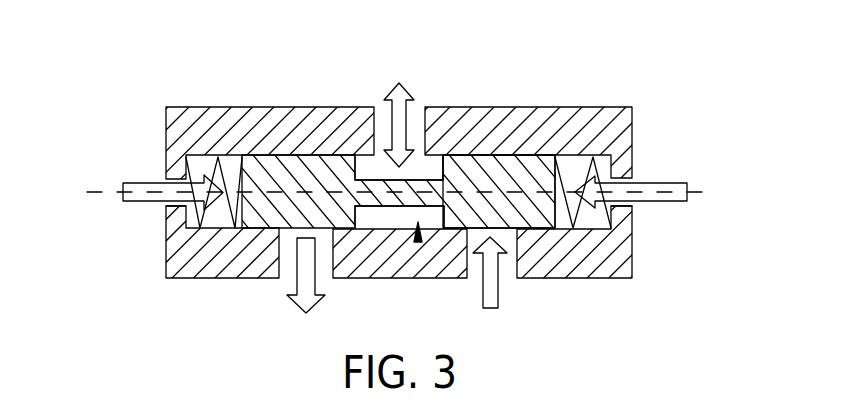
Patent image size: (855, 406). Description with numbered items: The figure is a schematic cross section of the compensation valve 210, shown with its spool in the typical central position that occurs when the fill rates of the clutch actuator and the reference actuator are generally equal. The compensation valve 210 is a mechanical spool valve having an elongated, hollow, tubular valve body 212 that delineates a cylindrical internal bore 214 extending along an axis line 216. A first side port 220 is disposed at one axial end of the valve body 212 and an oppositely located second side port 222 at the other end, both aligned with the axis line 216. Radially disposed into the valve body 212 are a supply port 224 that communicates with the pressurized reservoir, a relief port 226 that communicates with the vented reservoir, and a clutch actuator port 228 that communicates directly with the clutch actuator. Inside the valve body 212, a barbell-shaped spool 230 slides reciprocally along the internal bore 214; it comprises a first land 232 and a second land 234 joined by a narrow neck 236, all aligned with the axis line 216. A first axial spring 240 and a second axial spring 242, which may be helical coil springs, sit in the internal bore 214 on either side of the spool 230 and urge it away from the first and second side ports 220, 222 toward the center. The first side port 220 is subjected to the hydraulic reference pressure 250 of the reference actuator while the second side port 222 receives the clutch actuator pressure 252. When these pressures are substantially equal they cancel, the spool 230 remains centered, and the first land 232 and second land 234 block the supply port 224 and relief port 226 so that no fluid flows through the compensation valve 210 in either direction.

The compensation valve 210 is at (308, 80).
The valve body 212 is at (238, 133).
The internal bore 214 is at (419, 241).
The axis line 216 is at (700, 190).
The first side port 220 is at (166, 181).
The second side port 222 is at (622, 182).
The supply port 224 is at (516, 267).
The relief port 226 is at (282, 262).
The clutch actuator port 228 is at (378, 126).
The spool 230 is at (436, 155).
The first land 232 is at (302, 172).
The second land 234 is at (492, 168).
The neck 236 is at (397, 208).
The first axial spring 240 is at (192, 215).
The second axial spring 242 is at (604, 215).
The hydraulic reference pressure 250 is at (137, 202).
The clutch actuator pressure 252 is at (661, 203).